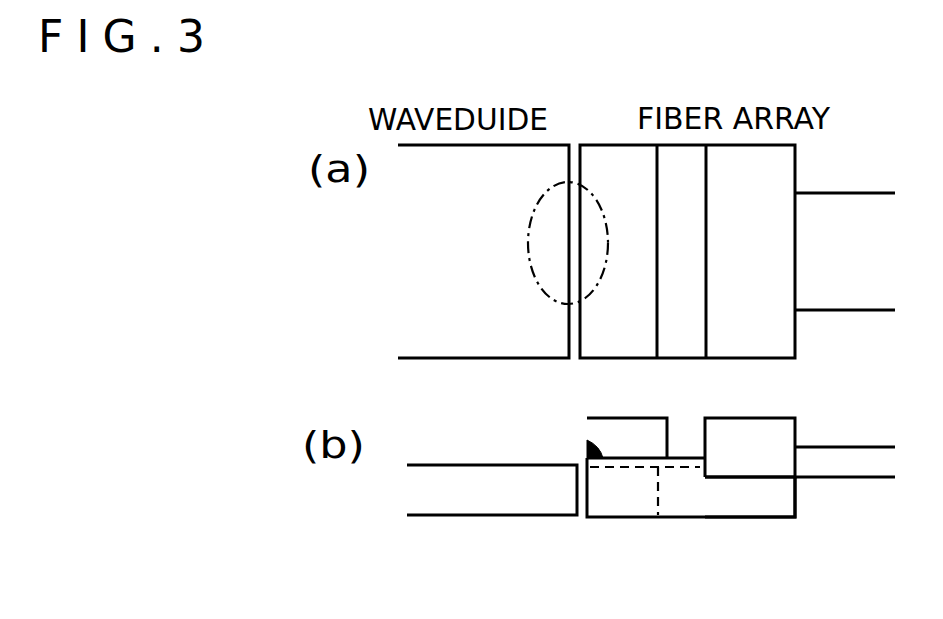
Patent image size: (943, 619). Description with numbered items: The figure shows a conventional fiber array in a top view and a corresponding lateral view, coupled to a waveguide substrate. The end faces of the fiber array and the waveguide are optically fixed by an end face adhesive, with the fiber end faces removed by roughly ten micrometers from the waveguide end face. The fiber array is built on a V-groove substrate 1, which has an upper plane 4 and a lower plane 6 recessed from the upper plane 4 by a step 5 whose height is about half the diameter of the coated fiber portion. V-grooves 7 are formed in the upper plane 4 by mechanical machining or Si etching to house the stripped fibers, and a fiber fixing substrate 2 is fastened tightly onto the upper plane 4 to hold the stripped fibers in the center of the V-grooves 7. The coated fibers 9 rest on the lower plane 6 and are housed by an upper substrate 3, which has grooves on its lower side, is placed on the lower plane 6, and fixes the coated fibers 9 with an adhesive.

The V-groove substrate 1 is at (618, 505).
The fiber fixing substrate 2 is at (610, 345).
The upper substrate 3 is at (767, 345).
The upper plane 4 is at (587, 432).
The step 5 is at (702, 468).
The lower plane 6 is at (772, 480).
The V-grooves 7 is at (658, 515).
The coated fibers 9 is at (868, 293).